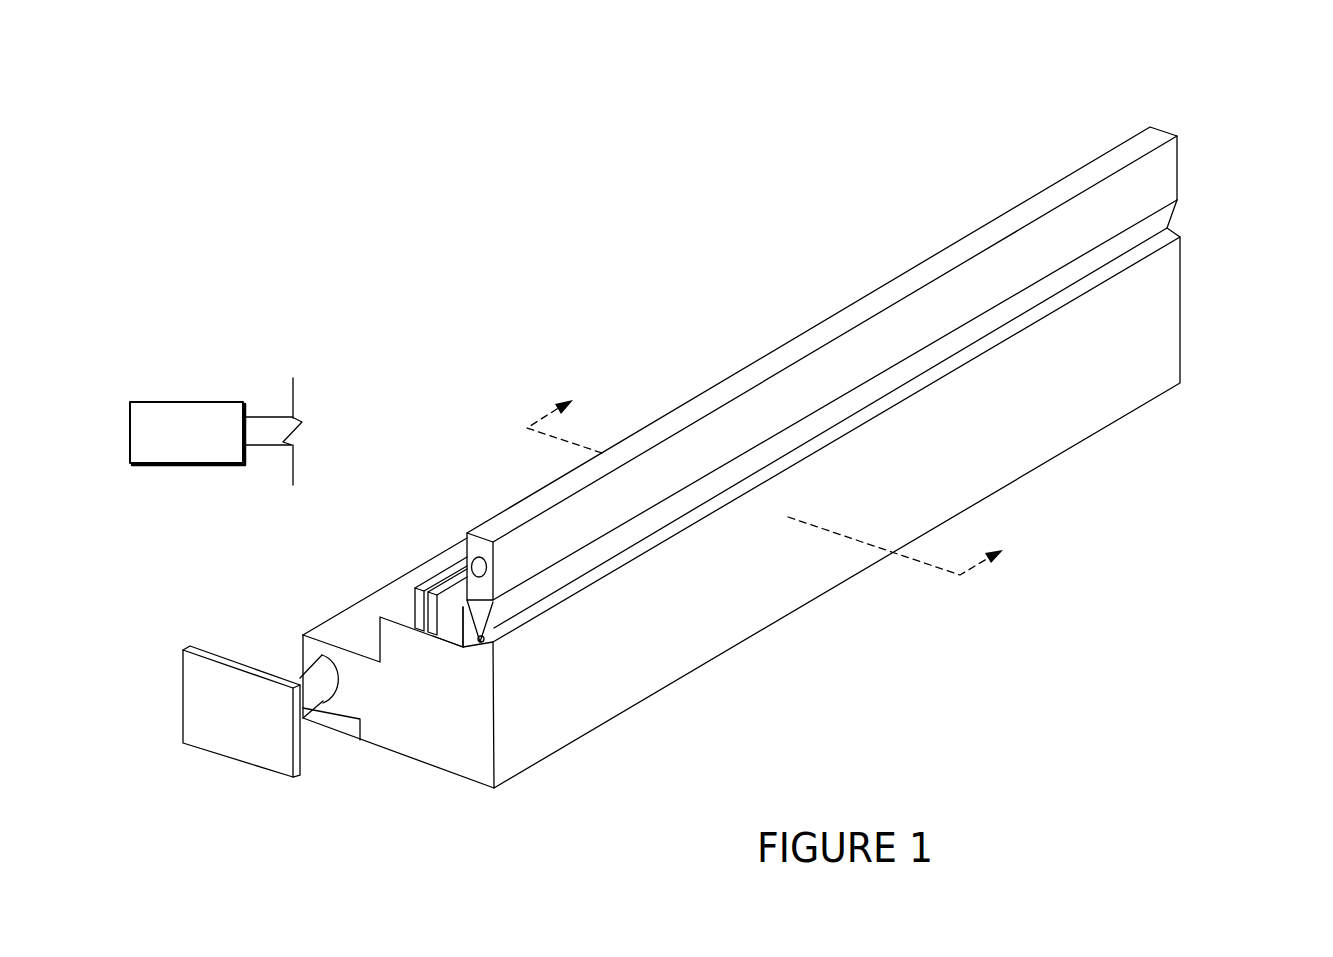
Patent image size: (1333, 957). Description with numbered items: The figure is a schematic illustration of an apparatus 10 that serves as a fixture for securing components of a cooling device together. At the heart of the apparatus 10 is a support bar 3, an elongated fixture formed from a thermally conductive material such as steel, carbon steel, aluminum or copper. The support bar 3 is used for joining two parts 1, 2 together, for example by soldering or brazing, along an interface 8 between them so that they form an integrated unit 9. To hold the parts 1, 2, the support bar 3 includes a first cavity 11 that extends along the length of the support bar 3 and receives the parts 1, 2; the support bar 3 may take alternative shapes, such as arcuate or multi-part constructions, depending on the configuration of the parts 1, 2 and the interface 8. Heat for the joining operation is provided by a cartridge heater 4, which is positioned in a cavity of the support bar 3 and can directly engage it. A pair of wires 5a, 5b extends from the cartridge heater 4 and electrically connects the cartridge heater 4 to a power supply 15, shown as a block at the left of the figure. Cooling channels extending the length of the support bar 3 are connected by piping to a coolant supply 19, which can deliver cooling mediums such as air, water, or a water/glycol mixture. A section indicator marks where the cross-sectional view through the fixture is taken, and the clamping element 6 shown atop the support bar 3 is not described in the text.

The part 1 is at (483, 608).
The part 2 is at (484, 642).
The support bar 3 is at (1174, 297).
The cartridge heater 4 is at (774, 479).
The wire 5a is at (415, 610).
The wire 5b is at (437, 592).
The clamp bar 6 is at (1086, 176).
The interface 8 is at (463, 645).
The integrated unit 9 is at (1192, 202).
The apparatus 10 is at (1277, 94).
The first cavity 11 is at (477, 662).
The power supply 15 is at (130, 432).
The coolant supply 19 is at (183, 697).